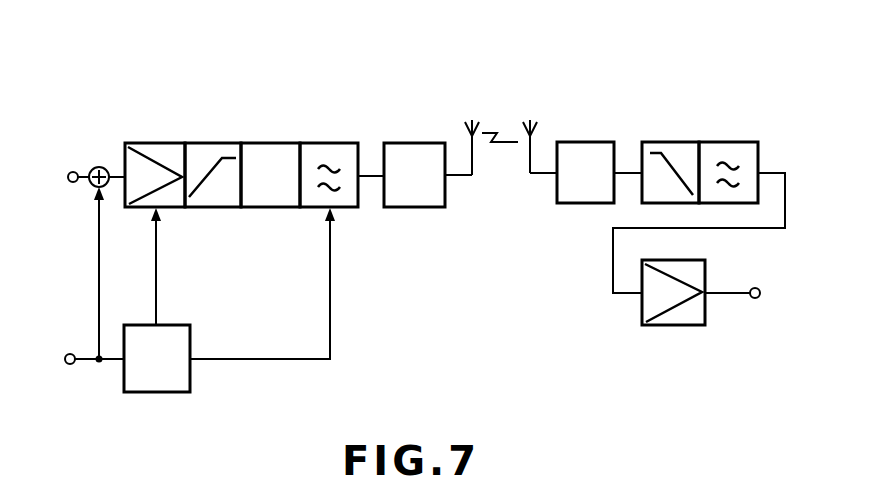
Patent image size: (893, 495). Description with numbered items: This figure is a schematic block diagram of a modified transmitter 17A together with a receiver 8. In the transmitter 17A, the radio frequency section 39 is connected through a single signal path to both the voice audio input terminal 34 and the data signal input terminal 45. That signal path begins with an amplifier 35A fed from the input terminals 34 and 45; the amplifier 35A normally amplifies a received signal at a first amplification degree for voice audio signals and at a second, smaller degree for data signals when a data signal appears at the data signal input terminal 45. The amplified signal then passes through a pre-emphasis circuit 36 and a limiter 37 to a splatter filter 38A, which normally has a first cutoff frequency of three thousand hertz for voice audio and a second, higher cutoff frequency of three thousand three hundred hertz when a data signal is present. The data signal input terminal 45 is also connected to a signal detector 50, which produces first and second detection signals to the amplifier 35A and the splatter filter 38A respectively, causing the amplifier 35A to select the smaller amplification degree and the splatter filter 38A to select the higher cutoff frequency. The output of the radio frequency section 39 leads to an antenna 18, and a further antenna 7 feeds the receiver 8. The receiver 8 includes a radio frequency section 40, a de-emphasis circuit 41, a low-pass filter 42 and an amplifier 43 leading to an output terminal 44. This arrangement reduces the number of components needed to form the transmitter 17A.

The transmitter 17A is at (180, 58).
The receiver 8 is at (683, 49).
The voice audio input terminal 34 is at (73, 183).
The amplifier 35A is at (143, 209).
The pre-emphasis circuit 36 is at (217, 209).
The limiter 37 is at (272, 209).
The splatter filter 38A is at (336, 142).
The radio frequency section 39 is at (414, 208).
The antenna 18 is at (474, 177).
The antenna 7 is at (531, 156).
The radio frequency section 40 is at (589, 205).
The de-emphasis circuit 41 is at (665, 141).
The low-pass filter 42 is at (727, 141).
The amplifier 43 is at (680, 327).
The output terminal 44 is at (757, 299).
The data signal input terminal 45 is at (70, 365).
The signal detector 50 is at (160, 394).